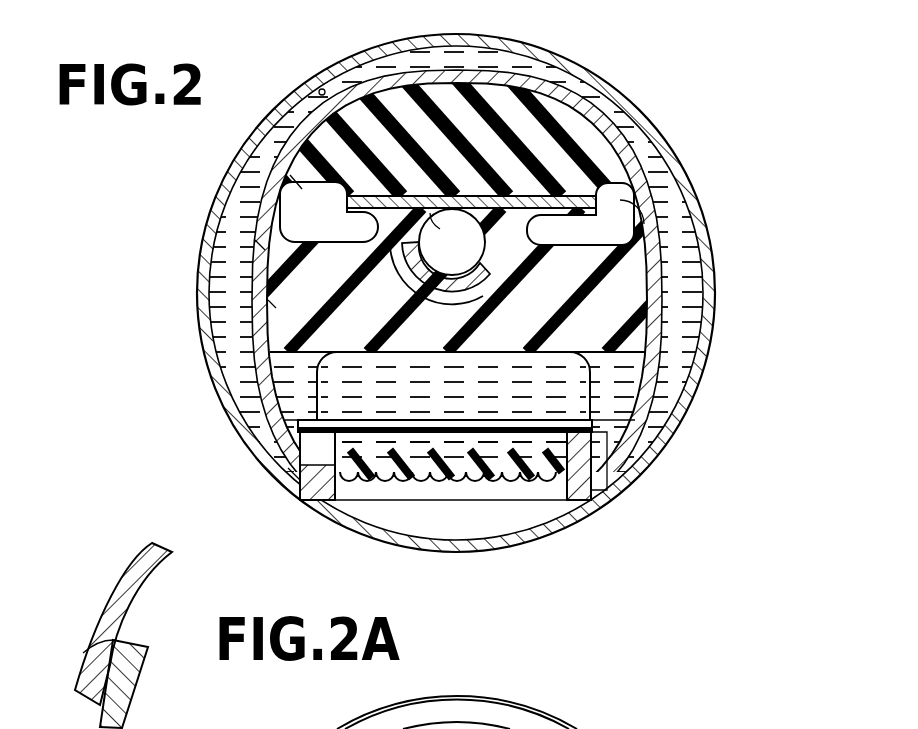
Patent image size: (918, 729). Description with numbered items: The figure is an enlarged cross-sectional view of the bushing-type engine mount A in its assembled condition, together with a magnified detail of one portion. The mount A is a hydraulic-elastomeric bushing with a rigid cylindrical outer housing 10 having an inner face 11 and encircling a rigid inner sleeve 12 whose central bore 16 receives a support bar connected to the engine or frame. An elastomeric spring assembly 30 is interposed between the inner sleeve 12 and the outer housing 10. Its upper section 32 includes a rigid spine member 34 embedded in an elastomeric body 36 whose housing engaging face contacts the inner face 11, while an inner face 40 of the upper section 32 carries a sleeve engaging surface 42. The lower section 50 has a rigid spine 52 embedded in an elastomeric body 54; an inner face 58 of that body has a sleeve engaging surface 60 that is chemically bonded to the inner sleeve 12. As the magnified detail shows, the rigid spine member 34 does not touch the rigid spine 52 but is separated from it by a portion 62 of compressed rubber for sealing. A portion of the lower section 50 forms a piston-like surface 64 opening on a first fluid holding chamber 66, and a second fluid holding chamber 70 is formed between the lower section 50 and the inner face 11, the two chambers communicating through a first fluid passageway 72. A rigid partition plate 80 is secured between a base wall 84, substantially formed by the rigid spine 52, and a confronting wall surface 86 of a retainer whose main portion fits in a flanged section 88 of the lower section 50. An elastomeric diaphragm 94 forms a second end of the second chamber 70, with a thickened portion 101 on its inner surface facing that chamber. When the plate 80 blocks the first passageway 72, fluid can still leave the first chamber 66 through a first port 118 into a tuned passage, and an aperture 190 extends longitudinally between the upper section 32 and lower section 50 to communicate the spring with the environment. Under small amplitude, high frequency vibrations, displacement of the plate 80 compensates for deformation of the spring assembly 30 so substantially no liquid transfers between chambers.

In FIG. 2, the outer housing 10 is at (650, 160).
In FIG. 2, the inner face 11 is at (318, 90).
In FIG. 2, the inner sleeve 12 is at (352, 231).
In FIG. 2, the central bore 16 is at (452, 242).
In FIG. 2, the elastomeric spring assembly 30 is at (588, 132).
In FIG. 2, the upper section 32 is at (468, 45).
In FIG. 2, the rigid spine member 34 is at (535, 87).
In FIG. 2A, the rigid spine member 34 is at (142, 580).
In FIG. 2, the elastomeric body 36 is at (282, 118).
In FIG. 2, the inner face 40 is at (588, 246).
In FIG. 2, the sleeve engaging surface 42 is at (365, 198).
In FIG. 2, the lower section 50 is at (668, 308).
In FIG. 2, the rigid spine 52 is at (263, 250).
In FIG. 2A, the rigid spine 52 is at (125, 690).
In FIG. 2, the elastomeric body 54 is at (273, 307).
In FIG. 2, the inner face 58 is at (643, 210).
In FIG. 2, the sleeve engaging surface 60 is at (400, 262).
In FIG. 2A, the portion of compressed rubber 62 is at (90, 657).
In FIG. 2, the piston-like surface 64 is at (493, 352).
In FIG. 2, the first fluid holding chamber 66 is at (567, 350).
In FIG. 2, the second fluid holding chamber 70 is at (552, 470).
In FIG. 2, the first fluid passageway 72 is at (312, 440).
In FIG. 2, the partition plate 80 is at (407, 425).
In FIG. 2, the base wall 84 is at (690, 413).
In FIG. 2, the confronting wall surface 86 is at (623, 443).
In FIG. 2, the flanged section 88 is at (297, 460).
In FIG. 2, the diaphragm 94 is at (500, 535).
In FIG. 2, the thickened portion 101 is at (456, 482).
In FIG. 2, the first port 118 is at (277, 380).
In FIG. 2, the aperture 190 is at (300, 188).
In FIG. 2, the bushing-type engine mount A is at (380, 42).